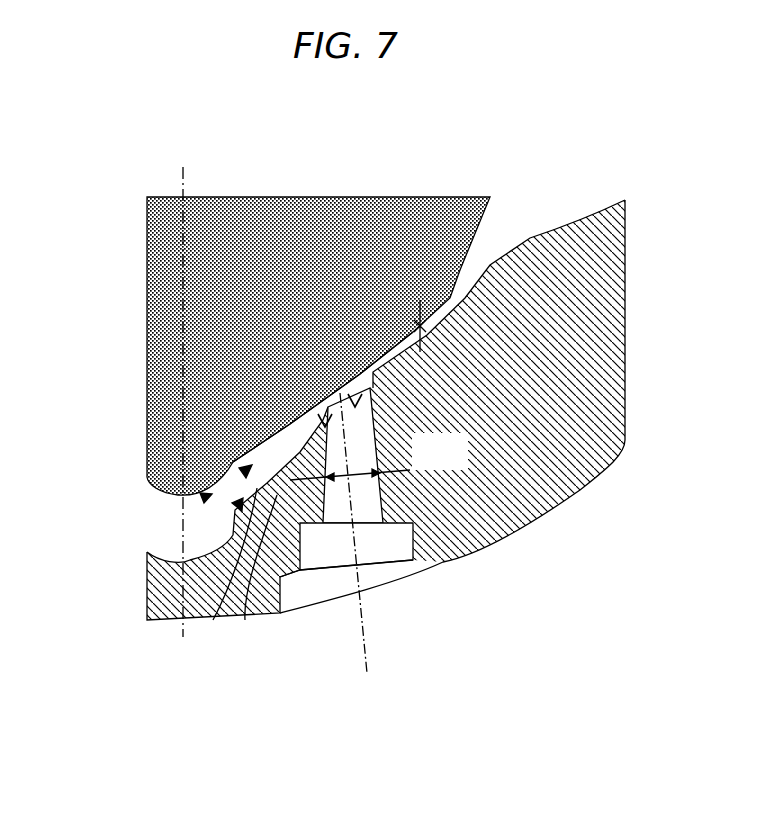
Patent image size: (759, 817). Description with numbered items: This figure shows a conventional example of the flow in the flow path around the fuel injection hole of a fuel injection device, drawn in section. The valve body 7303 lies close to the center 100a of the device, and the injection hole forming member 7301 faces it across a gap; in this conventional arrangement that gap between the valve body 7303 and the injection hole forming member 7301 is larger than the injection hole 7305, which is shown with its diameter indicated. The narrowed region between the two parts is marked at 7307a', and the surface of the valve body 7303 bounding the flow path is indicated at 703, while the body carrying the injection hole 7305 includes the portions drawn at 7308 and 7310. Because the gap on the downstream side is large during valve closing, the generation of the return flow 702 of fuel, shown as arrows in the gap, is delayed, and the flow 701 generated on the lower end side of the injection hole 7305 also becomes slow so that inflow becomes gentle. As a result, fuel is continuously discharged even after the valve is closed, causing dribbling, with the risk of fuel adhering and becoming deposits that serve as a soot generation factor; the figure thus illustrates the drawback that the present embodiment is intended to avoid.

The optical axis / center line 100a is at (188, 185).
The valve body 7303 is at (313, 250).
The gap portion 7307a' is at (404, 308).
The inner surface of holding member 703 is at (392, 356).
The flow 701 is at (290, 425).
The return flow 702 is at (262, 462).
The injection hole forming member 7301 is at (573, 403).
The lens 7310 is at (183, 530).
The protruding portion 7308 is at (213, 620).
The injection hole 7305 is at (245, 620).